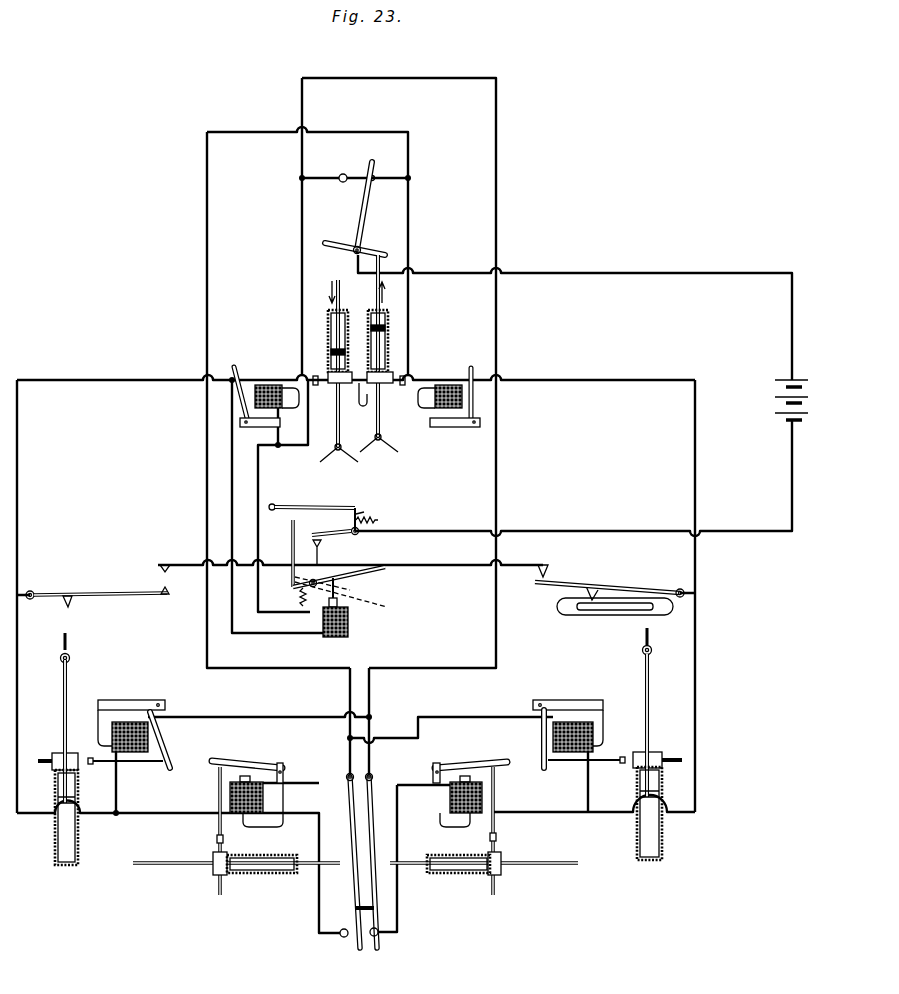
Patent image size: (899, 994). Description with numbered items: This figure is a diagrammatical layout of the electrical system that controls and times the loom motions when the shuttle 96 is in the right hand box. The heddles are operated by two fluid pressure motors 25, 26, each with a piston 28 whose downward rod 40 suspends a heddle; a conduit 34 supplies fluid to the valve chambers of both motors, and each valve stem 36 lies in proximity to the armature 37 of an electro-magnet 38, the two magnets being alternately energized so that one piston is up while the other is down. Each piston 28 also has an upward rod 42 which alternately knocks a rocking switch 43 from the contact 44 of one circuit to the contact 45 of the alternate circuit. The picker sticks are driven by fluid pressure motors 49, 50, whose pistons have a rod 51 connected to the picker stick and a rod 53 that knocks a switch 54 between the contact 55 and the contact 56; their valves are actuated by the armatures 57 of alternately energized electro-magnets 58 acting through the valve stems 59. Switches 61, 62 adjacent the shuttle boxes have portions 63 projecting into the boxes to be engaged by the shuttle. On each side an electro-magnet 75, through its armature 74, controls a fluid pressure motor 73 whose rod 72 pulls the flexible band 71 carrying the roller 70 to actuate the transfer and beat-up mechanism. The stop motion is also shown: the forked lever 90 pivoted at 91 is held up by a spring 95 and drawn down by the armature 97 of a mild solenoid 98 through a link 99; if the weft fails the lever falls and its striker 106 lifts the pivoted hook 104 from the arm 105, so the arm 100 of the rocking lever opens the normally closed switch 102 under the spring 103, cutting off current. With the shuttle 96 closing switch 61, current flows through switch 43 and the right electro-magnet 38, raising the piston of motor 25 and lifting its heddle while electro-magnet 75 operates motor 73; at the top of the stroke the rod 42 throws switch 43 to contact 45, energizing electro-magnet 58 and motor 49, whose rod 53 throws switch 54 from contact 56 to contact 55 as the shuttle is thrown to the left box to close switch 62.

The fluid pressure motor 25 is at (384, 322).
The fluid pressure motor 26 is at (331, 337).
The piston 28 is at (331, 352).
The conduit 34 is at (367, 398).
The stem 36 is at (268, 384).
The armature 37 is at (235, 365).
The electro-magnet 38 is at (268, 410).
The rod 40 is at (377, 421).
The rod 42 is at (380, 260).
The switch 43 is at (366, 226).
The contact 44 is at (370, 176).
The contact 45 is at (343, 174).
The fluid pressure motor 49 is at (473, 874).
The fluid pressure motor 50 is at (285, 874).
The rod 51 is at (178, 868).
The rod 53 is at (420, 861).
The switch 54 is at (354, 880).
The contact 55 is at (344, 938).
The contact 56 is at (380, 936).
The armature 57 is at (246, 764).
The electro-magnet 58 is at (263, 802).
The valve stem 59 is at (216, 800).
The switch 61 is at (626, 585).
The switch 62 is at (106, 592).
The projecting portion 63 is at (72, 602).
The roller 70 is at (60, 660).
The flexible band 71 is at (62, 644).
The rod 72 is at (63, 703).
The fluid pressure motor 73 is at (55, 841).
The armature 74 is at (168, 752).
The electro-magnet 75 is at (128, 722).
The forked lever 90 is at (386, 571).
The pivot 91 is at (315, 588).
The spring 95 is at (298, 594).
The shuttle 96 is at (660, 615).
The armature 97 is at (358, 598).
The solenoid 98 is at (349, 626).
The link 99 is at (338, 588).
The arm 100 is at (332, 528).
The switch 102 is at (323, 545).
The spring 103 is at (385, 518).
The pivoted hook 104 is at (331, 507).
The arm 105 is at (364, 512).
The striker 106 is at (290, 555).